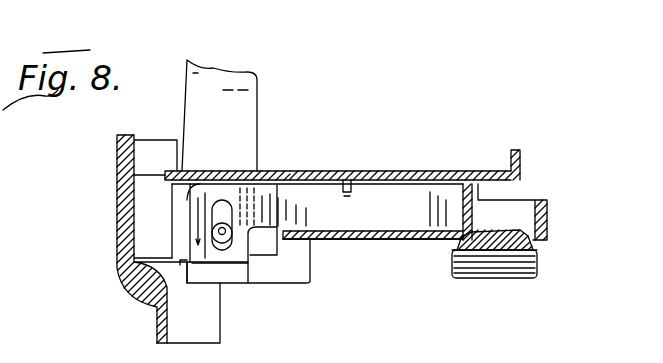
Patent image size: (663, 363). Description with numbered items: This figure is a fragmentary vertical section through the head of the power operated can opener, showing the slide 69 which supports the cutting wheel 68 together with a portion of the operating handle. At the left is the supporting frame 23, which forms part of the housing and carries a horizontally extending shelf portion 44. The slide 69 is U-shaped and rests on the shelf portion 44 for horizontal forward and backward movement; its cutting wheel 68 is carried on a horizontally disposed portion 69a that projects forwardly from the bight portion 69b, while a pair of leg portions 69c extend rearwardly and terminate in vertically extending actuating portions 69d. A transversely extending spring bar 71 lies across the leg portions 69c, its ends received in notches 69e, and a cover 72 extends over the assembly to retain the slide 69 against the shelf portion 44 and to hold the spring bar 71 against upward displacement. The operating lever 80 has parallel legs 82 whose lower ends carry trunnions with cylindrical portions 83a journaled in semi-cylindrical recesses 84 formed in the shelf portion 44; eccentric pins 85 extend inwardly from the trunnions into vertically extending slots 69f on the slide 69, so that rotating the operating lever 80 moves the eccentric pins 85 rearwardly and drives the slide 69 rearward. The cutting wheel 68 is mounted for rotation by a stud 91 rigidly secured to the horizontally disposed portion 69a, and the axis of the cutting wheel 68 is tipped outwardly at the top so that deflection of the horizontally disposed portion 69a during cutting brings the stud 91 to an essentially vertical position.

The supporting frame 23 is at (155, 309).
The operating lever 80 is at (222, 65).
The legs 82 is at (256, 85).
The cylindrical portions 83a is at (222, 172).
The cover 72 is at (399, 171).
The bight portion 69b is at (483, 163).
The spring bar 71 is at (348, 171).
The semi-cylindrical recesses 84 is at (194, 171).
The slots 69f is at (233, 206).
The notches 69e is at (352, 191).
The slide 69 is at (348, 240).
The leg portions 69c is at (400, 243).
The shelf portion 44 is at (378, 243).
The horizontally disposed portion 69a is at (552, 219).
The stud 91 is at (496, 230).
The cutting wheel 68 is at (537, 258).
The actuating portions 69d is at (195, 248).
The eccentric pins 85 is at (248, 286).